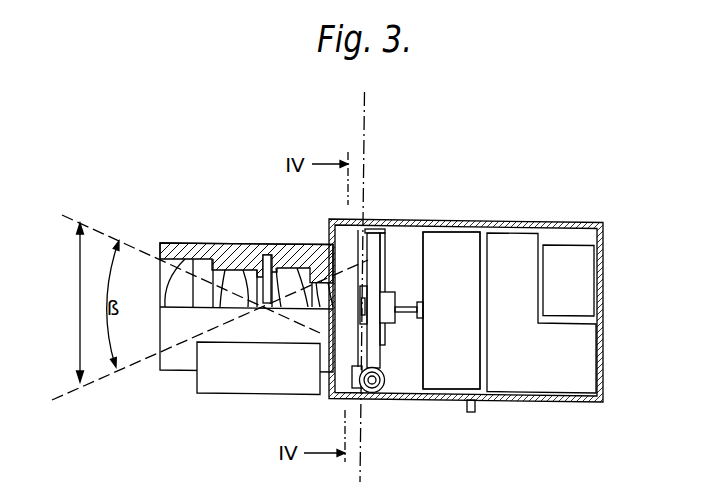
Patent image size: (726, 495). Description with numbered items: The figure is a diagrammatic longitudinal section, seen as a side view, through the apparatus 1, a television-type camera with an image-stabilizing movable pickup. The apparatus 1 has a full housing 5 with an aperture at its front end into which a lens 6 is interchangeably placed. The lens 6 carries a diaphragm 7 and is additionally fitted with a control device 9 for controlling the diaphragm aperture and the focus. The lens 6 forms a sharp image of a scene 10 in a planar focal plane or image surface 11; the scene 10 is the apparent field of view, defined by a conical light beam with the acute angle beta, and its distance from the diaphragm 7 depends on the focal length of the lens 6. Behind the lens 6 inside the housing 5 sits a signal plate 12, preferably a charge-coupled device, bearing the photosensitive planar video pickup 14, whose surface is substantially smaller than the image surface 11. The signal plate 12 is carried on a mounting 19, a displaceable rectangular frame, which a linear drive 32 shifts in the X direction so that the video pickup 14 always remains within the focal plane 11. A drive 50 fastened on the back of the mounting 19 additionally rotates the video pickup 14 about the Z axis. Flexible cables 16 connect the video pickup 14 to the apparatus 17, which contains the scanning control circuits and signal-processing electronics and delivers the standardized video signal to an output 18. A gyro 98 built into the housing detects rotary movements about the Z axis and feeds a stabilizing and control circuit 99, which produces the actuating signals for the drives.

The apparatus 1 is at (323, 233).
The housing 5 is at (448, 380).
The lens 6 is at (202, 246).
The diaphragm 7 is at (258, 284).
The control device 9 is at (218, 381).
The scene 10 is at (78, 311).
The image surface 11 is at (365, 123).
The signal plate 12 is at (368, 293).
The video pickup 14 is at (361, 309).
The flexible cables 16 is at (400, 323).
The apparatus 17 is at (466, 243).
The output 18 is at (478, 411).
The mounting 19 is at (386, 324).
The linear drive 32 is at (373, 392).
The drive 50 is at (390, 307).
The gyro 98 is at (583, 272).
The stabilizing and control circuit 99 is at (521, 245).